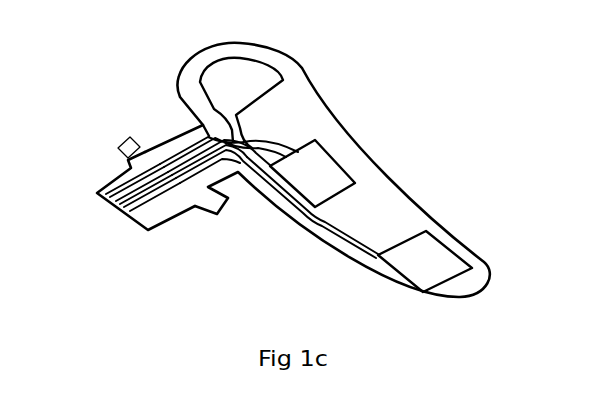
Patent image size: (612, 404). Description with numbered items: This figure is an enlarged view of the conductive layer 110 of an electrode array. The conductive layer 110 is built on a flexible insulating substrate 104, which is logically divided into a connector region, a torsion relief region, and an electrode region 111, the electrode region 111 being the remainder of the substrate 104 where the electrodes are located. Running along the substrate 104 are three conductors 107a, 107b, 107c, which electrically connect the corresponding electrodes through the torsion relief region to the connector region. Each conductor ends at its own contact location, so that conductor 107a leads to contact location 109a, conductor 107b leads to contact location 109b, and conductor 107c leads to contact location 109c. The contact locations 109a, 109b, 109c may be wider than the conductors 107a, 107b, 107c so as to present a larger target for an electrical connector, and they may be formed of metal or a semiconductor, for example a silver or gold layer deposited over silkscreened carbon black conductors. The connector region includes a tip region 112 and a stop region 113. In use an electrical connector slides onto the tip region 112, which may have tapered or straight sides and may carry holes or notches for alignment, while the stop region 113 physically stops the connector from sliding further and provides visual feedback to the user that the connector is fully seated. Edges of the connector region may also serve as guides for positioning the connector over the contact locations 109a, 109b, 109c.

The flexible insulating substrate 104 is at (387, 215).
The conductor 107a is at (233, 117).
The conductor 107b is at (277, 147).
The conductor 107c is at (350, 223).
The contact location 109a is at (103, 202).
The contact location 109b is at (120, 215).
The contact location 109c is at (142, 227).
The conductive layer 110 is at (158, 103).
The electrode region 111 is at (167, 85).
The tip region 112 is at (118, 157).
The stop region 113 is at (127, 138).